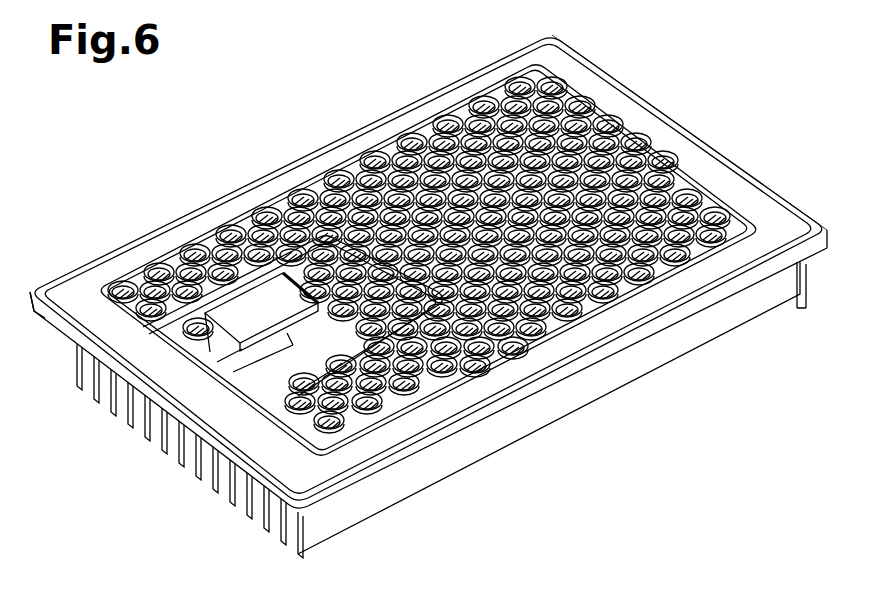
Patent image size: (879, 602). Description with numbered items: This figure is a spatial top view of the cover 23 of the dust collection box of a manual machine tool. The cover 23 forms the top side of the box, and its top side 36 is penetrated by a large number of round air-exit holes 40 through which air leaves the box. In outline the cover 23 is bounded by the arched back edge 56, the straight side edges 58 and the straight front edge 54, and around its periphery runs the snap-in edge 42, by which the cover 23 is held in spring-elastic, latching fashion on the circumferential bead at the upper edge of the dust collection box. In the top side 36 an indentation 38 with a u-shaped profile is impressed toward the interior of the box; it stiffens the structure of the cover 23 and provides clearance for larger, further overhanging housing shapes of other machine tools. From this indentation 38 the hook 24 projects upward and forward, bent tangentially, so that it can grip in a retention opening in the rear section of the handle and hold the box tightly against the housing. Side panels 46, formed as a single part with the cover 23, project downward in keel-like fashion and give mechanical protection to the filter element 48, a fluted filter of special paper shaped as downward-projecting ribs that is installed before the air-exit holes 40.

The cover 23 is at (352, 126).
The hook 24 is at (222, 330).
The top side 36 is at (774, 201).
The indentation 38 is at (303, 270).
The air-exit holes 40 is at (717, 200).
The snap-in edge 42 is at (800, 268).
The side panels 46 is at (458, 482).
The filter element 48 is at (152, 435).
The front edge 54 is at (73, 345).
The back edge 56 is at (702, 113).
The side edges 58 is at (215, 197).